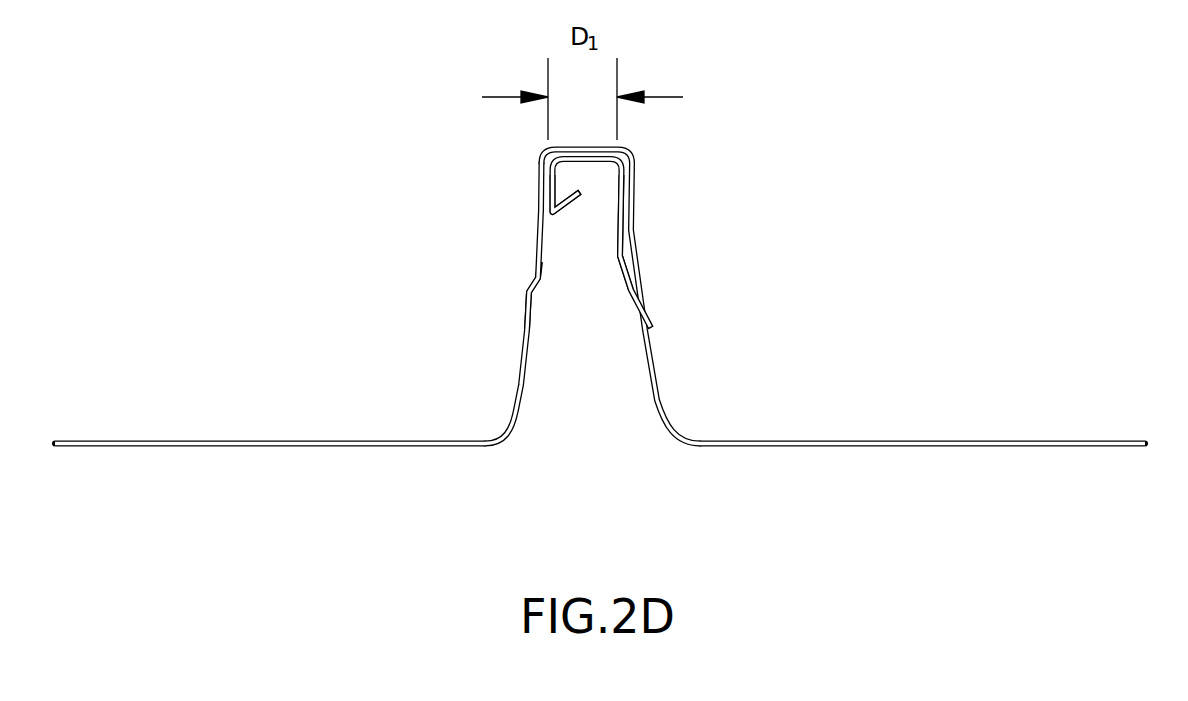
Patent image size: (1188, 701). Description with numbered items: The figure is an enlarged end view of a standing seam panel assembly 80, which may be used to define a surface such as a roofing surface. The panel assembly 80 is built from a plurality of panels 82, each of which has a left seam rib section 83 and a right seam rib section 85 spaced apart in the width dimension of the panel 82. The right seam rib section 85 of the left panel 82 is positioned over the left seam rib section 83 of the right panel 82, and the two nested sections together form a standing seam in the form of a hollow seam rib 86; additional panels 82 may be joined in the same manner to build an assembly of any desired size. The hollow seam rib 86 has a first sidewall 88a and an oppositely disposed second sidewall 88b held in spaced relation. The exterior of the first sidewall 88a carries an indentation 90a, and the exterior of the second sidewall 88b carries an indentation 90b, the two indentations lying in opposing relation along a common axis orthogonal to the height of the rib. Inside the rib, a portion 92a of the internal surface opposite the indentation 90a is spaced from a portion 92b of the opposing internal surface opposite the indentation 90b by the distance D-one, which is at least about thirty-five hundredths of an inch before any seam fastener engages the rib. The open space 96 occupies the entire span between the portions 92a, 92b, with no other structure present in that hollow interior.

The panel assembly 80 is at (918, 93).
The panel 82 is at (52, 462).
The left seam rib section 83 is at (650, 344).
The right seam rib section 85 is at (528, 325).
The hollow seam rib 86 is at (630, 150).
The first sidewall 88a is at (525, 348).
The second sidewall 88b is at (655, 372).
The indentation 90a is at (540, 255).
The indentation 90b is at (633, 248).
The portion of internal surface 92a is at (545, 252).
The portion of opposing internal surface 92b is at (617, 256).
The open space 96 is at (578, 427).